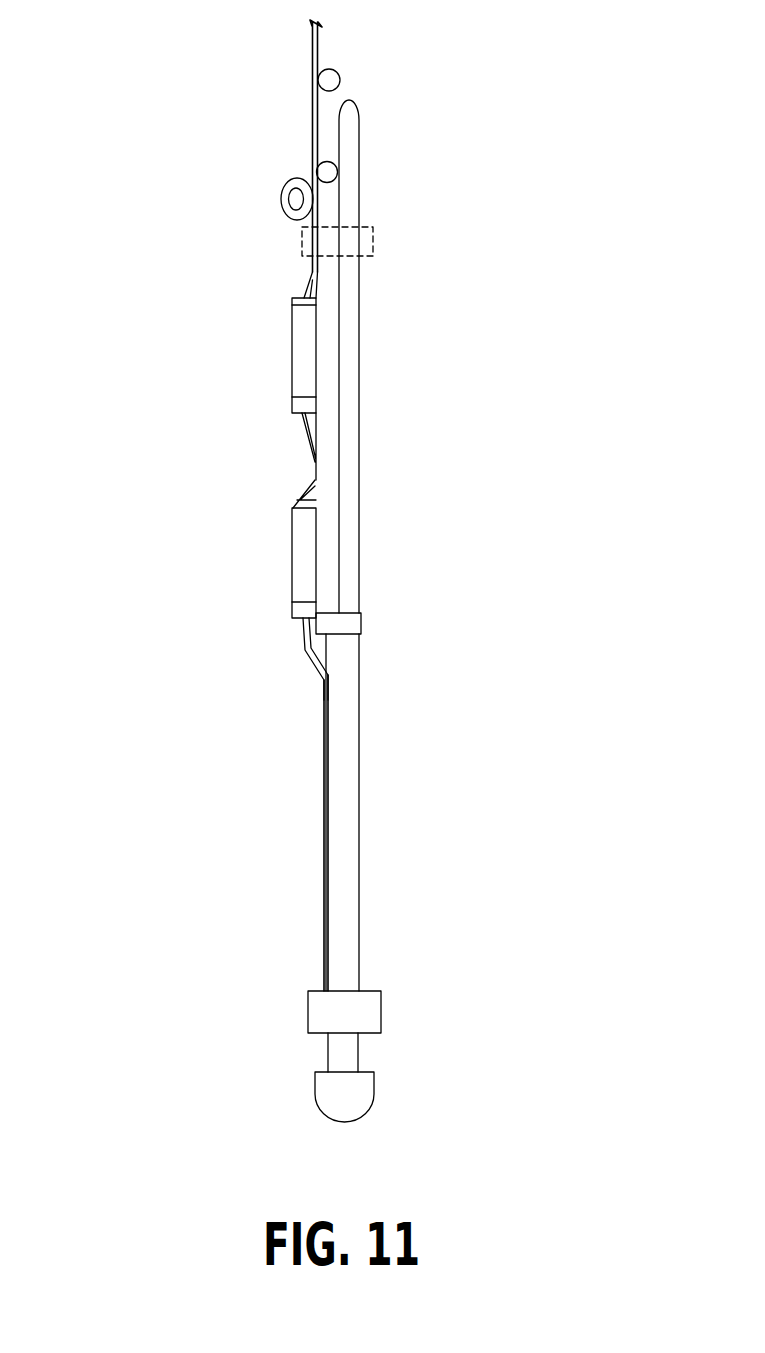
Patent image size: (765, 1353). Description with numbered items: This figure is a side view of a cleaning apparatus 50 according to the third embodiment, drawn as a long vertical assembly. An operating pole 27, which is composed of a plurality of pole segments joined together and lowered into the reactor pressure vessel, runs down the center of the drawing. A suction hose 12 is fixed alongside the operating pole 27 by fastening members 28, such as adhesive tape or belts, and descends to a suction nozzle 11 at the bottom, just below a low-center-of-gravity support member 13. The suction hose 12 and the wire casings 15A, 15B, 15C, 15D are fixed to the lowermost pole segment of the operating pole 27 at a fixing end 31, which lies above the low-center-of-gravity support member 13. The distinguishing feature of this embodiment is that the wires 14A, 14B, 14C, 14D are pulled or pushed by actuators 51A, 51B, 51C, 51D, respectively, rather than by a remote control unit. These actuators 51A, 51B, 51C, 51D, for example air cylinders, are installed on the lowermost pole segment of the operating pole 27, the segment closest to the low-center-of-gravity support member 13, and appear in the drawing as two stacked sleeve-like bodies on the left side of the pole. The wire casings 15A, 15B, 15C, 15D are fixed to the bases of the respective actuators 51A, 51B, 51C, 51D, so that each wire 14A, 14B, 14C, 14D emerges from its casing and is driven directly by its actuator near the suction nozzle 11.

The cleaning apparatus 50 is at (495, 144).
The fastening member 28 is at (373, 243).
The operating pole 27 is at (333, 477).
The actuator 51B is at (222, 355).
The actuator 51D is at (292, 357).
The actuator 51A is at (222, 563).
The actuator 51C is at (292, 560).
The wire casing 15B is at (210, 460).
The wire casing 15D is at (210, 460).
The wire 14B is at (210, 460).
The wire 14D is at (303, 440).
The wire casing 15A is at (216, 659).
The wire casing 15C is at (216, 659).
The wire 14A is at (216, 659).
The wire 14C is at (305, 650).
The fixing end 31 is at (361, 622).
The suction hose 12 is at (360, 778).
The low-center-of-gravity support member 13 is at (381, 1010).
The suction nozzle 11 is at (374, 1085).